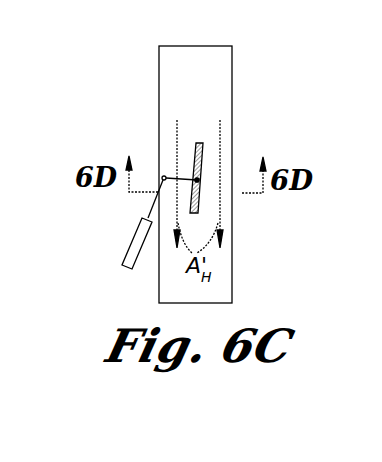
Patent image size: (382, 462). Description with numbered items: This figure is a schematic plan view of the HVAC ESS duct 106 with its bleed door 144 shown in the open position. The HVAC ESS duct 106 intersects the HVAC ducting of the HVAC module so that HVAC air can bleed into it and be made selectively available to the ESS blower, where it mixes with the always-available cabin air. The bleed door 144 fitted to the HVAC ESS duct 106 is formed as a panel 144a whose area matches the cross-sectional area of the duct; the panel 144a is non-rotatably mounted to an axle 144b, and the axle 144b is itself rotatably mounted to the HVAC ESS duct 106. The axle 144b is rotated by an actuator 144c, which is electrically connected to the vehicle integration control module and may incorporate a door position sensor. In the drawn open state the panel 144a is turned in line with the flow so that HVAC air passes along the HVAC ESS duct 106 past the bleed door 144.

The HVAC ESS duct 106 is at (233, 90).
The bleed door 144 is at (197, 129).
The panel 144a is at (202, 158).
The axle 144b is at (198, 181).
The actuator 144c is at (130, 249).